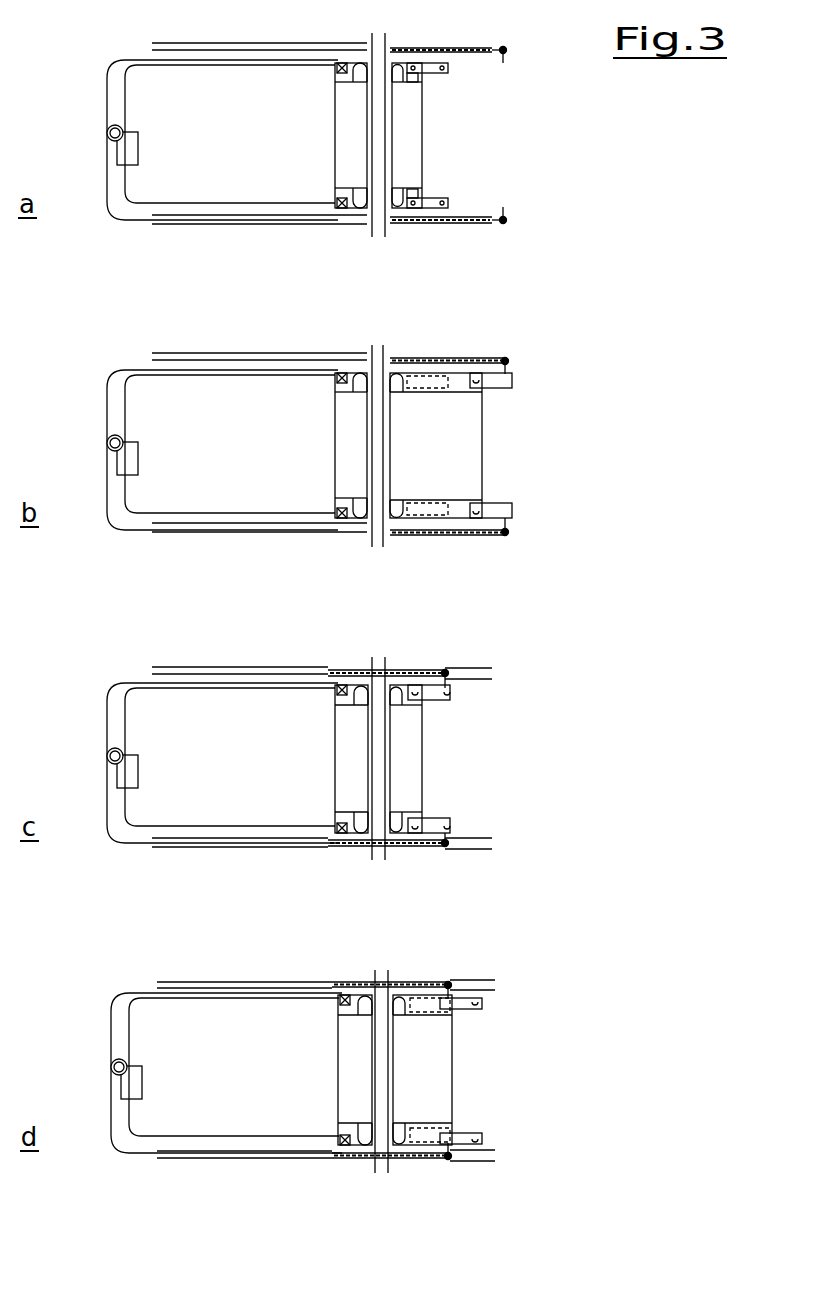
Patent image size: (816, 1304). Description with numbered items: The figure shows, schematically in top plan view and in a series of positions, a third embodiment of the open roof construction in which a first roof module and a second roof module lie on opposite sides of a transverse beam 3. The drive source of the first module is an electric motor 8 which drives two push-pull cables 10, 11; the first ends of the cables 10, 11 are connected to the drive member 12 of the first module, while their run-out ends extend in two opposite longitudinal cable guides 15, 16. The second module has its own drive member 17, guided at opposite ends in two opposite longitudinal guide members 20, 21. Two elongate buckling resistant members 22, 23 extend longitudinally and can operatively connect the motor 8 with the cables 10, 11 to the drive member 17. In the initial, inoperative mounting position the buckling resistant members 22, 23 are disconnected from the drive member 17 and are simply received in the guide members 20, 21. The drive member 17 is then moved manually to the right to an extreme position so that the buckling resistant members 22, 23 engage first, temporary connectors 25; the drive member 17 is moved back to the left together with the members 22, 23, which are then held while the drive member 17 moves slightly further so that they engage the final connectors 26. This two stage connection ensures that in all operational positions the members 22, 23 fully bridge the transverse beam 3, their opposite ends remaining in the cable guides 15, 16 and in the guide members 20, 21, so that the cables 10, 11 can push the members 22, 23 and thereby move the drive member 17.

The transverse beam 3 is at (378, 135).
The electric motor 8 is at (138, 150).
The push-pull cable 10 is at (137, 222).
The push-pull cable 11 is at (142, 57).
The drive member 12 is at (335, 70).
The cable guide 15 is at (221, 226).
The cable guide 16 is at (203, 46).
The drive member 17 is at (424, 79).
The guide member 20 is at (465, 48).
The guide member 21 is at (467, 225).
The elongate buckling resistant member 22 is at (407, 48).
The elongate buckling resistant member 23 is at (412, 225).
The first connector 25 is at (514, 382).
The final connector 26 is at (450, 1002).